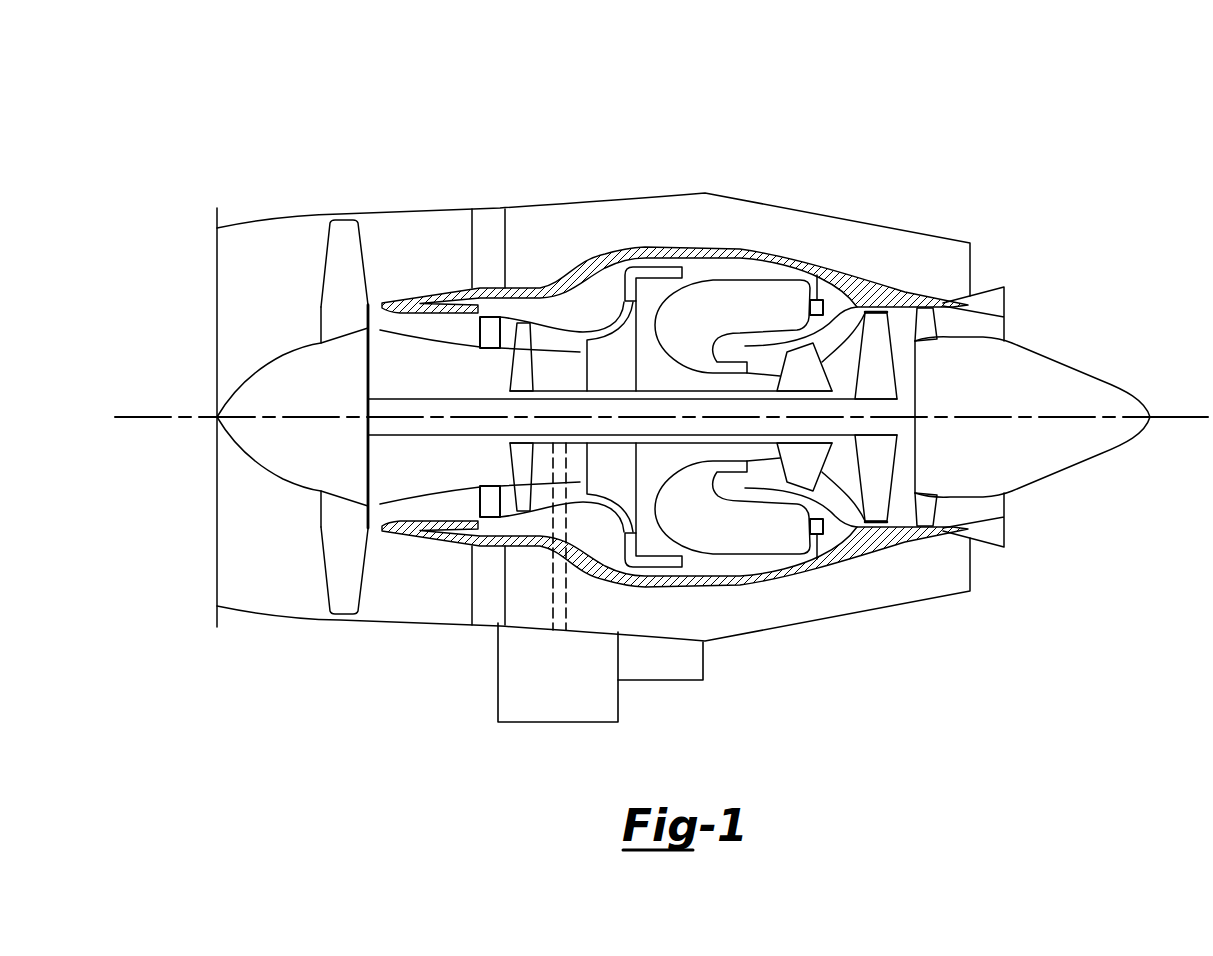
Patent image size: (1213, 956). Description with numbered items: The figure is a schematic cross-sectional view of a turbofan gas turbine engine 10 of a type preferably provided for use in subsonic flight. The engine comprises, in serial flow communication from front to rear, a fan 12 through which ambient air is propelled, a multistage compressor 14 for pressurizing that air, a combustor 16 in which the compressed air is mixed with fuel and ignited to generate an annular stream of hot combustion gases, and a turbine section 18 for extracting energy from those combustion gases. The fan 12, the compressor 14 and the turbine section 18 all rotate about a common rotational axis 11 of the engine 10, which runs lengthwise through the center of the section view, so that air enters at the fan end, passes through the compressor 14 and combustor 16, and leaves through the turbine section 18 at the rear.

The turbofan gas turbine engine 10 is at (858, 139).
The rotational axis 11 is at (1182, 417).
The fan 12 is at (340, 543).
The multistage compressor 14 is at (549, 333).
The combustor 16 is at (730, 297).
The turbine section 18 is at (840, 470).